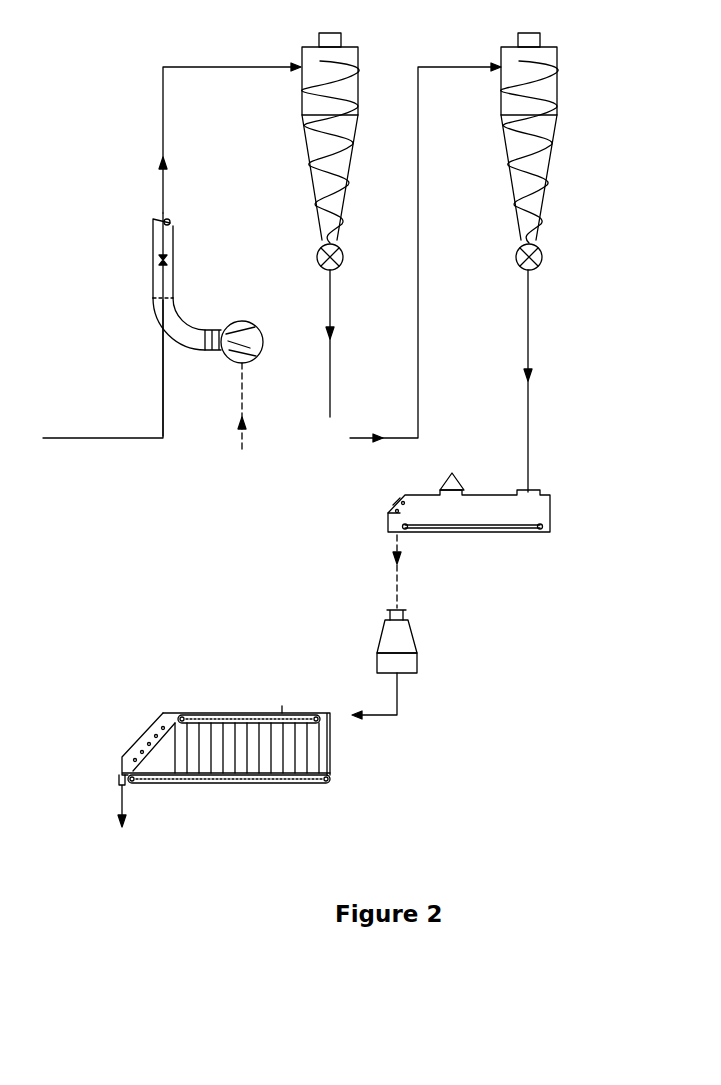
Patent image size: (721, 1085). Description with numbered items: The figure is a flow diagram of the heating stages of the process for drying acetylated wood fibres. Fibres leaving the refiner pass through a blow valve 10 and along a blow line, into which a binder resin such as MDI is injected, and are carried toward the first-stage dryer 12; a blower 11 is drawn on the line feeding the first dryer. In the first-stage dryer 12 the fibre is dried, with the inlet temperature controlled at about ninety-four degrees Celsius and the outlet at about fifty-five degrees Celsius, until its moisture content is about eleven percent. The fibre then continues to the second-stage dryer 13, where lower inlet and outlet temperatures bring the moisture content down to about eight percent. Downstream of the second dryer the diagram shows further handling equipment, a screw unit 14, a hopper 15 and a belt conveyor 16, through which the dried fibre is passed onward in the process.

The blow valve 10 is at (100, 439).
The blower / fan with feed pipe 11 is at (242, 399).
The stage 1 dryer 12 is at (348, 58).
The stage 2 dryer 13 is at (548, 58).
The screw conveyor / mixer 14 is at (468, 513).
The hopper / discharge valve 15 is at (405, 665).
The belt conveyor 16 is at (232, 752).